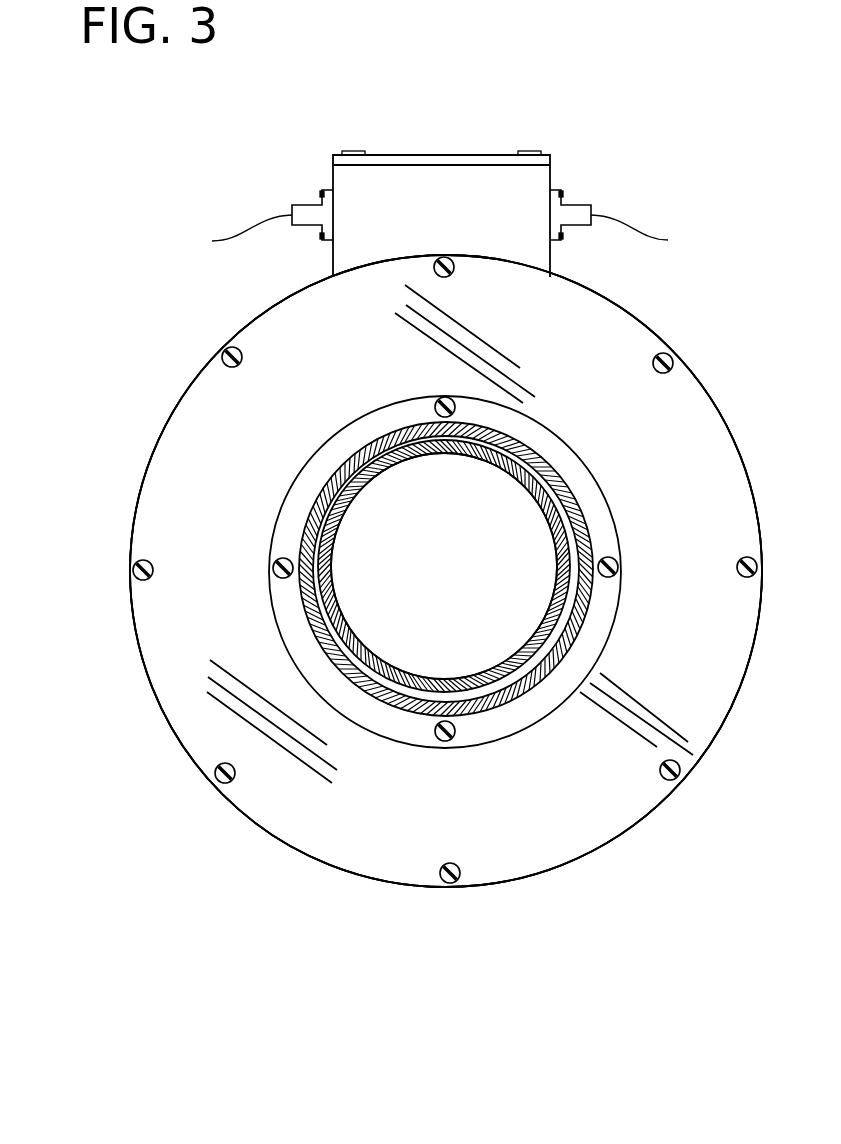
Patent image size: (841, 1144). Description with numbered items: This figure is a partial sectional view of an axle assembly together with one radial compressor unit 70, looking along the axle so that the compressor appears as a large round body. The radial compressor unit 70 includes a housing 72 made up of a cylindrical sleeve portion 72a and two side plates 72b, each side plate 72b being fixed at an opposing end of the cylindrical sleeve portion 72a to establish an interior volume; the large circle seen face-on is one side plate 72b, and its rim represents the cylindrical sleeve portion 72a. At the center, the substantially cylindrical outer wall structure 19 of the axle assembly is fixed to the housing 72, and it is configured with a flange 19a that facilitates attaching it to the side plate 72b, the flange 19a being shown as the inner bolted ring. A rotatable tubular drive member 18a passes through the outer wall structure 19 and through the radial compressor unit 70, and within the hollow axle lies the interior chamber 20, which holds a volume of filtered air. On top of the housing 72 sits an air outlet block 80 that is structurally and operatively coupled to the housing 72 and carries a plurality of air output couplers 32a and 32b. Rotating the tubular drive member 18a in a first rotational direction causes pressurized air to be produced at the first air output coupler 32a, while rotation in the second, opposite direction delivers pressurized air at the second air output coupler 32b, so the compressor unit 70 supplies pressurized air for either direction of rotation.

The radial compressor unit 70 is at (390, 539).
The housing 72 is at (342, 837).
The cylindrical sleeve portion 72a is at (110, 616).
The side plate 72b is at (185, 498).
The air outlet block 80 is at (484, 121).
The air output coupler 32a is at (631, 224).
The second air output coupler 32b is at (249, 226).
The flange 19a is at (603, 606).
The outer wall structure 19 is at (410, 704).
The tubular drive member 18a is at (457, 690).
The interior chamber 20 is at (514, 546).